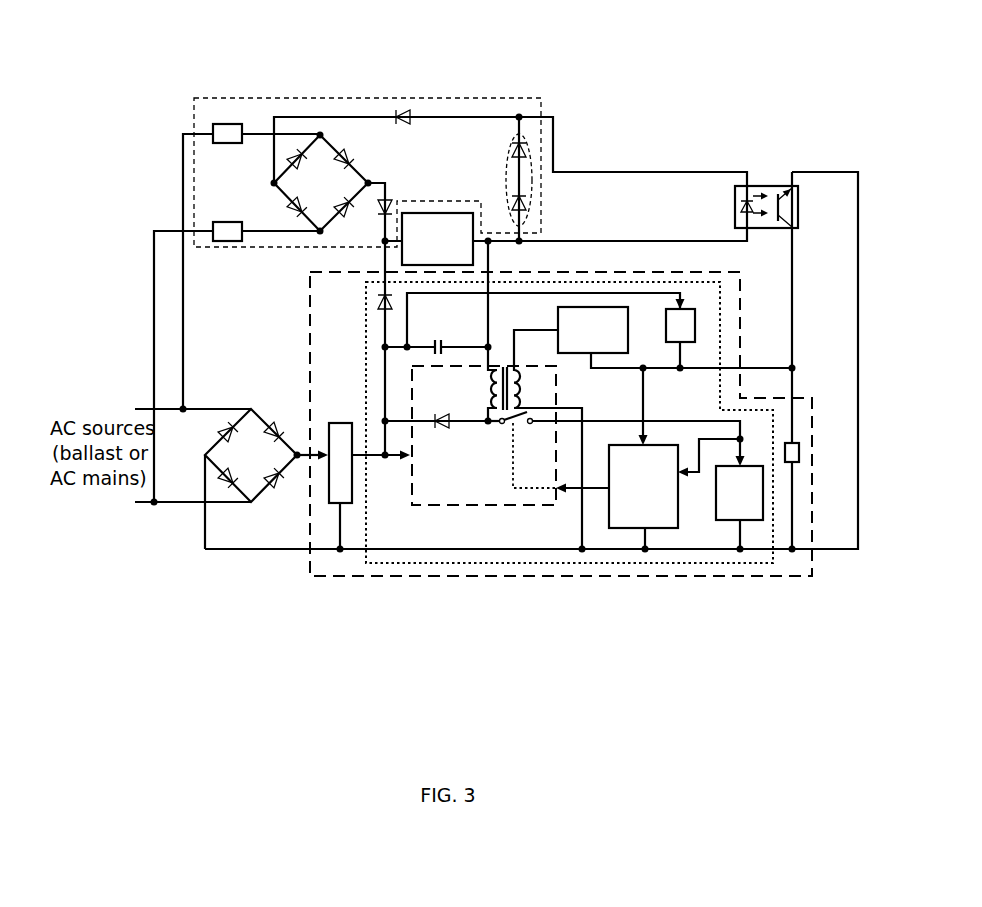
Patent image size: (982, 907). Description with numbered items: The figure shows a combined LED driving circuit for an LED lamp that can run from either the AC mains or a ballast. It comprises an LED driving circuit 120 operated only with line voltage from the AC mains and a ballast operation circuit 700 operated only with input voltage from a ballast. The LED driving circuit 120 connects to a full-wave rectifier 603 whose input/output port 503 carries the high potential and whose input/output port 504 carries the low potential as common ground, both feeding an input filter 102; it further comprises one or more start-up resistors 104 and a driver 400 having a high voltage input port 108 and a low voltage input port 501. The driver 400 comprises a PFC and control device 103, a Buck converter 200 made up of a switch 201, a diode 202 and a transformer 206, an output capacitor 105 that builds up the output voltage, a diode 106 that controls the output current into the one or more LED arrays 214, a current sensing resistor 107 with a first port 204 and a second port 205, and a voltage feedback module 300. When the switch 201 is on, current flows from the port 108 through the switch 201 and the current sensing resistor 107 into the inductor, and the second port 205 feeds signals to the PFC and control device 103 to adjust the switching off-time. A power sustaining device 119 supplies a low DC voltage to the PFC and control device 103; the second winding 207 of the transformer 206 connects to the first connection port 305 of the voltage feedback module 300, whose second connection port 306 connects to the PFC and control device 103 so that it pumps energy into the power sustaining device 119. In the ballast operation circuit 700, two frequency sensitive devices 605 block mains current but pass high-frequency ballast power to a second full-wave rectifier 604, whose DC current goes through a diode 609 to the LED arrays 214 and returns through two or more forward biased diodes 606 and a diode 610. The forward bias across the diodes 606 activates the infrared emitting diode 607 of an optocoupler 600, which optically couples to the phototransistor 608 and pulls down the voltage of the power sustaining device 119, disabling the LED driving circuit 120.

The ballast operation circuit 700 is at (367, 124).
The second full-wave rectifier 604 is at (315, 135).
The frequency sensitive devices 605 is at (217, 222).
The diode 610 is at (397, 110).
The forward biased diodes 606 is at (516, 140).
The diode 609 is at (386, 200).
The LED arrays 214 is at (448, 212).
The optocoupler 600 is at (766, 158).
The infrared emitting diode 607 is at (743, 197).
The phototransistor 608 is at (786, 208).
The LED driving circuit 120 is at (526, 422).
The driver 400 is at (569, 381).
The Buck converter 200 is at (485, 516).
The full-wave rectifier 603 is at (248, 412).
The input/output port 503 is at (297, 452).
The input/output port 504 is at (206, 457).
The input filter 102 is at (341, 422).
The high voltage input port 108 is at (383, 419).
The diode 106 is at (390, 304).
The output capacitor 105 is at (438, 356).
The diode 202 is at (441, 428).
The switch 201 is at (505, 426).
The transformer 206 is at (499, 372).
The first connection port 305 is at (505, 376).
The second winding 207 is at (518, 386).
The voltage feedback module 300 is at (610, 306).
The second connection port 306 is at (627, 369).
The start-up resistors 104 is at (690, 308).
The low voltage input port 501 is at (647, 435).
The PFC and control device 103 is at (622, 529).
The current sensing resistor 107 is at (720, 522).
The first port 204 is at (742, 438).
The second port 205 is at (742, 553).
The power sustaining device 119 is at (797, 465).